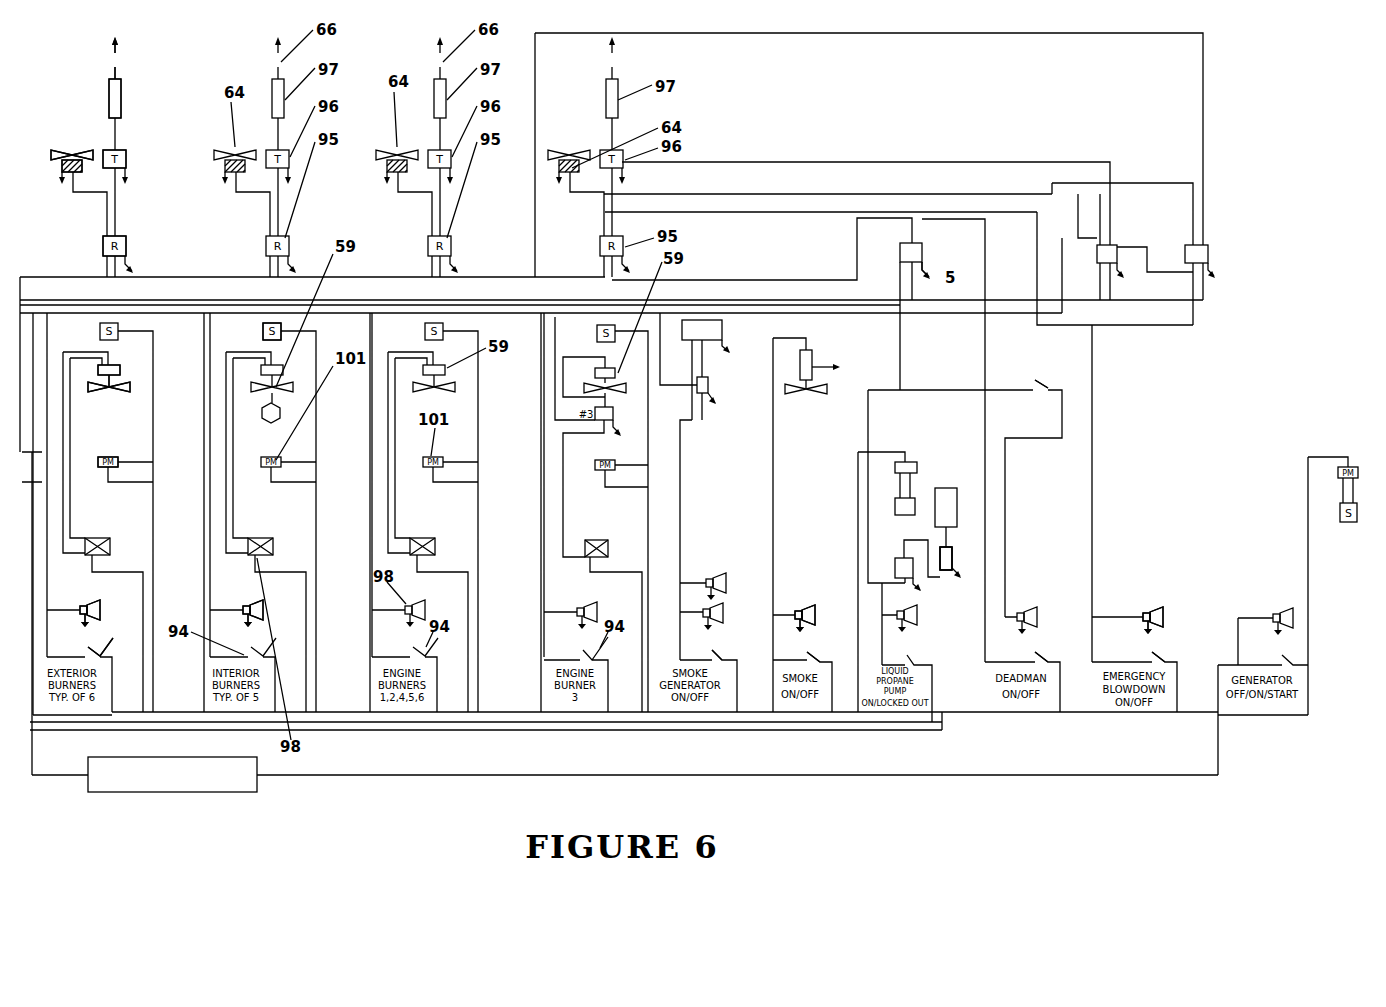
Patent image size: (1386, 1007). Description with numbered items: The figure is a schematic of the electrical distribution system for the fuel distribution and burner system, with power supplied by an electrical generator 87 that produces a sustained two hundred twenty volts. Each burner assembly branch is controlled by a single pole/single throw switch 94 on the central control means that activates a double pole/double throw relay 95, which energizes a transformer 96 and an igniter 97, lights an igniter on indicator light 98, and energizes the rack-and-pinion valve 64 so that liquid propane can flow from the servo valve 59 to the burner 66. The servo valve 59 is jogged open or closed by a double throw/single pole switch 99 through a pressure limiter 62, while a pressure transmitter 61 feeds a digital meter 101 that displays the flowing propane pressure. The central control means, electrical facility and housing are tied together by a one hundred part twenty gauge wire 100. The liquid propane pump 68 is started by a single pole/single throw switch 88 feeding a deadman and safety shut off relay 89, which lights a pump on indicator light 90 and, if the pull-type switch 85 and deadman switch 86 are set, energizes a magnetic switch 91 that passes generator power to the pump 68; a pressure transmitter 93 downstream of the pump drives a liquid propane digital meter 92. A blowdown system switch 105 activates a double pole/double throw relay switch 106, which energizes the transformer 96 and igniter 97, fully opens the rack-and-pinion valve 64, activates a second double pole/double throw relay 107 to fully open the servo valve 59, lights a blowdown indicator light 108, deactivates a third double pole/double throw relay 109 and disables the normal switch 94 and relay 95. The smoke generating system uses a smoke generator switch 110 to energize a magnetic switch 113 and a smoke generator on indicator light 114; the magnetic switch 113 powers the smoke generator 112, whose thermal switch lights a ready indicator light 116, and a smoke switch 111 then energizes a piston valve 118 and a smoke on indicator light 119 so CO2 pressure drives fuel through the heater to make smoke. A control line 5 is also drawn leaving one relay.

The burner 66 is at (118, 62).
The igniter 97 is at (122, 100).
The transformer 96 is at (127, 157).
The double pole/double throw relay 95 is at (122, 238).
The rack-and-pinion valve 64 is at (72, 147).
The servo valve 59 is at (121, 367).
The pressure transmitter 61 is at (283, 326).
The pressure limiter 62 is at (283, 405).
The digital meter 101 is at (106, 456).
The igniter on indicator light 98 is at (81, 604).
The double throw/single pole switch 99 is at (262, 616).
The single pole/single throw switch 94 is at (101, 647).
The second double pole/double throw relay 107 is at (613, 409).
The smoke generator 112 is at (716, 320).
The magnetic switch 113 is at (709, 386).
The smoke generator ready indicator light 116 is at (724, 577).
The smoke generator on indicator light 114 is at (725, 612).
The smoke generator switch 110 is at (722, 660).
The piston valve 118 is at (817, 357).
The smoke on indicator light 119 is at (810, 607).
The smoke switch 111 is at (812, 655).
The pull-type switch 85 is at (1048, 383).
The deadman switch 86 is at (1048, 662).
The liquid propane digital meter 92 is at (917, 467).
The pressure transmitter 93 is at (915, 504).
The liquid propane pump 68 is at (946, 514).
The single pole/single throw switch 88 is at (908, 578).
The deadman and safety shut off relay 89 is at (945, 570).
The liquid propane pump on indicator light 90 is at (943, 570).
The magnetic switch 91 is at (950, 570).
The 100 part 20 gauge wire 100 is at (922, 243).
The double pole/double throw relay switch 106 is at (1120, 241).
The third double pole/double throw relay 109 is at (1210, 249).
The blowdown indicator light 108 is at (1160, 608).
The blowdown system switch 105 is at (1165, 660).
The electrical generator 87 is at (257, 790).
The control line 5 is at (938, 274).